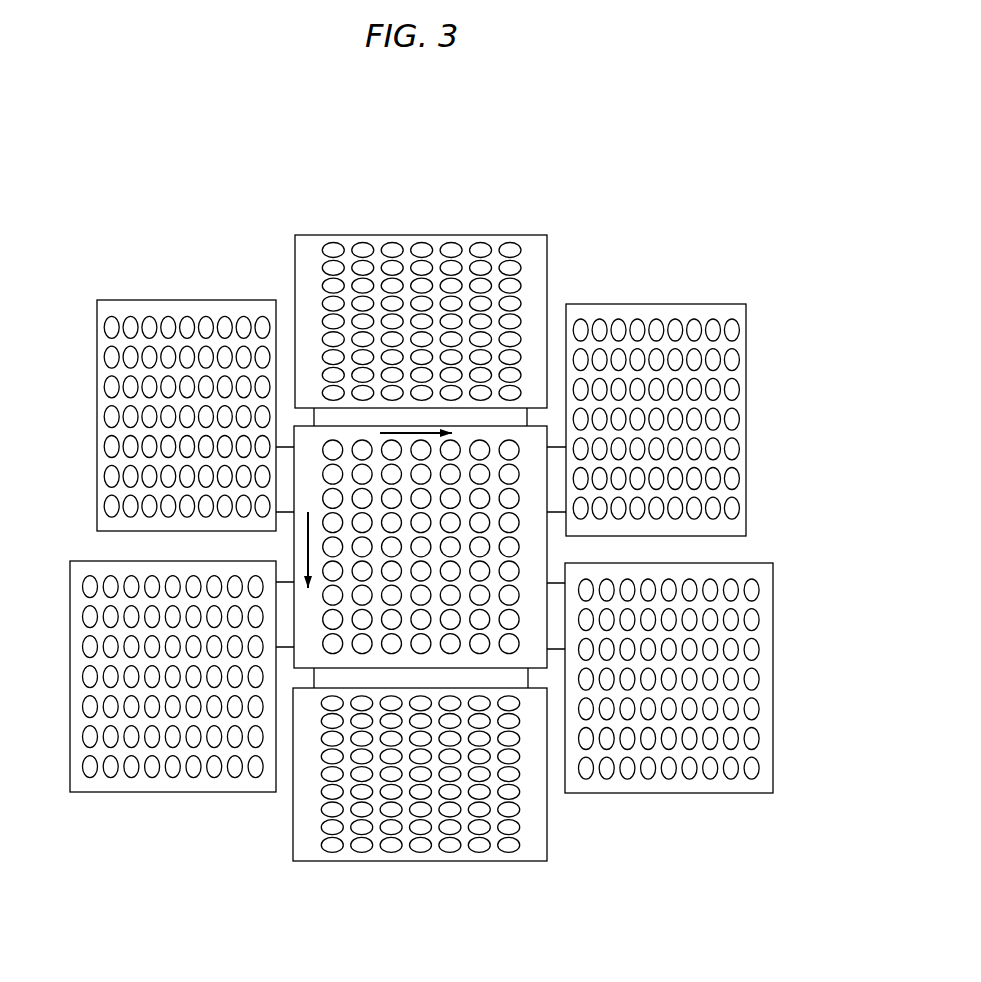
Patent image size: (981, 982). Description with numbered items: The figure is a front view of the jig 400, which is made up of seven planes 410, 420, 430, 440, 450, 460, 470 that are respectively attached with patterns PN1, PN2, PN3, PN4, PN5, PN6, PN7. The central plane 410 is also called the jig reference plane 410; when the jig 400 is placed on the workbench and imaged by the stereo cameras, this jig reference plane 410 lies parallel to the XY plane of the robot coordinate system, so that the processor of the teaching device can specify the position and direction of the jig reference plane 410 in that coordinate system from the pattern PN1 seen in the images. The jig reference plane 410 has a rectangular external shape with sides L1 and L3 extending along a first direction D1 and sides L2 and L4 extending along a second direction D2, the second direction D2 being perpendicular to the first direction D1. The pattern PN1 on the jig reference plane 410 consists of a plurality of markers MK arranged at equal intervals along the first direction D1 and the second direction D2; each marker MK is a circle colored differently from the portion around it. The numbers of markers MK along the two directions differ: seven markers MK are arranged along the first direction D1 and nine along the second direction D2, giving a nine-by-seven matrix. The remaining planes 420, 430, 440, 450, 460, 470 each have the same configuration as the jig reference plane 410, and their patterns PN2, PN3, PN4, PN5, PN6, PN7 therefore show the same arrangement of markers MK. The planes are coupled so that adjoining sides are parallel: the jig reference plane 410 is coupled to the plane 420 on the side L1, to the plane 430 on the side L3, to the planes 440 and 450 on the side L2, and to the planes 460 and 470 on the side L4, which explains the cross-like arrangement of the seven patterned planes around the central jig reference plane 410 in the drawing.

The jig 400 is at (652, 151).
The jig reference plane 410 is at (394, 530).
The plane 420 is at (450, 281).
The plane 430 is at (420, 817).
The plane 440 is at (153, 376).
The plane 450 is at (173, 719).
The plane 460 is at (689, 379).
The plane 470 is at (669, 720).
The pattern PN1 is at (319, 655).
The pattern PN2 is at (527, 243).
The pattern PN3 is at (496, 857).
The pattern PN4 is at (113, 341).
The pattern PN5 is at (104, 784).
The pattern PN6 is at (733, 345).
The pattern PN7 is at (740, 782).
The marker MK is at (516, 285).
The first direction D1 is at (413, 430).
The second direction D2 is at (304, 548).
The side L1 is at (360, 426).
The side L2 is at (294, 638).
The side L3 is at (388, 669).
The side L4 is at (548, 552).